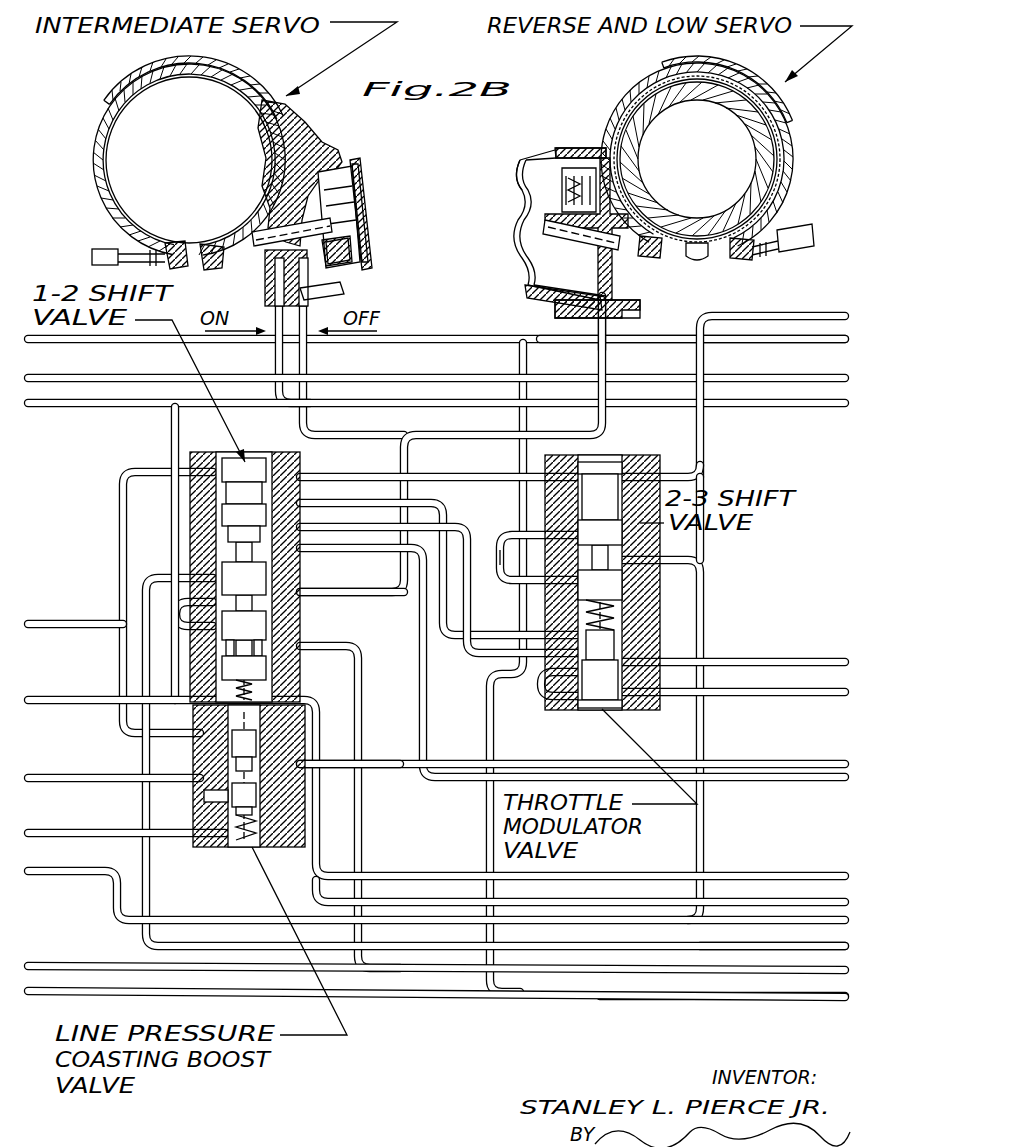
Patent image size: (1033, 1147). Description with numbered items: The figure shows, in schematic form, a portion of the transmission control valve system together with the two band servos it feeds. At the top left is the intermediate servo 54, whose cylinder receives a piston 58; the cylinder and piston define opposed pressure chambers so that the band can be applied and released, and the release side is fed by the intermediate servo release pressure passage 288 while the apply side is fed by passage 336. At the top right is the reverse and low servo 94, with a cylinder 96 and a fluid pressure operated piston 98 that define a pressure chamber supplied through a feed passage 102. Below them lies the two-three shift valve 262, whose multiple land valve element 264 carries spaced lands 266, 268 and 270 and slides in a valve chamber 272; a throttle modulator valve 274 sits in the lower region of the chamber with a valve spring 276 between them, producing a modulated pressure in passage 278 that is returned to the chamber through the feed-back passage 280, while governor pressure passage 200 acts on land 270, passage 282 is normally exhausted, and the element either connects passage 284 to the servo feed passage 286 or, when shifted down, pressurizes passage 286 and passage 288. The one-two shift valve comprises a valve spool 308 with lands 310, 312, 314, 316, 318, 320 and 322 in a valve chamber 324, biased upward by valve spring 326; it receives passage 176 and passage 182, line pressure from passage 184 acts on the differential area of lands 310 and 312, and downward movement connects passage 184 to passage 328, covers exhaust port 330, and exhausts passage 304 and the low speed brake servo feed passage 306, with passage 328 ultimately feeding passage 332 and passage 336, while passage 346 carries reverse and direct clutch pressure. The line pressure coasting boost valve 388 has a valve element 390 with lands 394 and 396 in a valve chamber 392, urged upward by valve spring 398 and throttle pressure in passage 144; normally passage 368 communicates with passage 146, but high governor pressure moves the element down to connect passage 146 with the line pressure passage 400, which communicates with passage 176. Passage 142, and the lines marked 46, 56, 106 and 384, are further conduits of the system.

The line 46 is at (86, 960).
The intermediate servo 54 is at (350, 292).
The servo piston 56 is at (352, 260).
The piston 58 is at (362, 206).
The fluid pressure operated servo 94 is at (556, 300).
The cylinder 96 is at (570, 148).
The fluid pressure operated piston 98 is at (532, 250).
The feed passage 102 is at (612, 326).
The line 106 is at (50, 988).
The communicating passage 142 is at (40, 879).
The primary throttle valve output pressure passage 144 is at (46, 838).
The passage 146 is at (44, 784).
The passage 176 is at (140, 706).
The passage 182 is at (313, 544).
The passage 184 is at (340, 634).
The governor pressure passage 200 is at (846, 312).
The 2-3 shift valve 262 is at (624, 538).
The multiple land valve element 264 is at (503, 545).
The valve land 266 is at (620, 588).
The valve land 268 is at (505, 520).
The valve land 270 is at (612, 476).
The valve chamber 272 is at (620, 562).
The throttle modulator valve 274 is at (622, 682).
The valve spring 276 is at (620, 614).
The passage 278 is at (548, 690).
The feed-back passage 280 is at (356, 468).
The passage 282 is at (828, 660).
The passage 284 is at (708, 621).
The servo feed passage 286 is at (46, 348).
The intermediate servo release pressure passage 288 is at (312, 361).
The passage 304 is at (343, 597).
The low speed brake servo feed passage 306 is at (398, 434).
The valve spool 308 is at (234, 588).
The valve land 310 is at (226, 664).
The valve land 312 is at (226, 652).
The valve land 314 is at (205, 596).
The valve land 316 is at (272, 622).
The valve land 318 is at (230, 548).
The valve land 320 is at (228, 518).
The valve land 322 is at (272, 458).
The valve chamber 324 is at (272, 668).
The valve spring 326 is at (216, 688).
The passage 328 is at (174, 620).
The exhaust port 330 is at (205, 612).
The passage 332 is at (784, 392).
The passage 336 is at (813, 412).
The passage 346 is at (778, 348).
The passage 368 is at (838, 762).
The line 384 is at (828, 696).
The line pressure coasting boost valve 388 is at (280, 748).
The valve element 390 is at (228, 766).
The valve chamber 392 is at (280, 786).
The valve land 394 is at (280, 738).
The valve land 396 is at (280, 800).
The valve spring 398 is at (246, 846).
The line pressure passage 400 is at (176, 798).